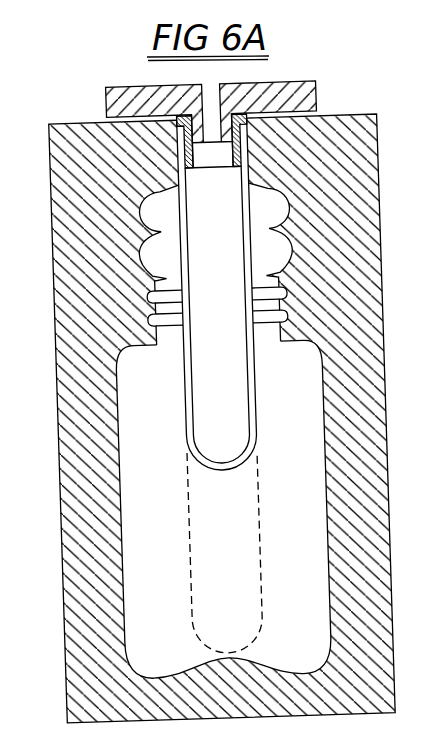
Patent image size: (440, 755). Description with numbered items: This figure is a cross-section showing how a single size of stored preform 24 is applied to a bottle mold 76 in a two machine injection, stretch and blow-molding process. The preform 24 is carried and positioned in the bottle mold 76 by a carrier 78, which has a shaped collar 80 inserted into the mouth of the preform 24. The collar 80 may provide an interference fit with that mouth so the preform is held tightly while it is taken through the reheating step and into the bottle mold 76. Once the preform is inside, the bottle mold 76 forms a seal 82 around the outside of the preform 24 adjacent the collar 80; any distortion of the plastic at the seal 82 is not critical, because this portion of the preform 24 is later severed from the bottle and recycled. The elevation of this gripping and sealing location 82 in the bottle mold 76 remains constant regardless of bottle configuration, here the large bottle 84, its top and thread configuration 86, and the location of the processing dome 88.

The preform 24 is at (253, 405).
The bottle mold 76 is at (66, 419).
The carrier 78 is at (128, 92).
The shaped collar 80 is at (245, 152).
The seal 82 is at (178, 156).
The large bottle configuration 84 is at (118, 525).
The top and thread configuration 86 is at (287, 302).
The processing dome 88 is at (148, 254).